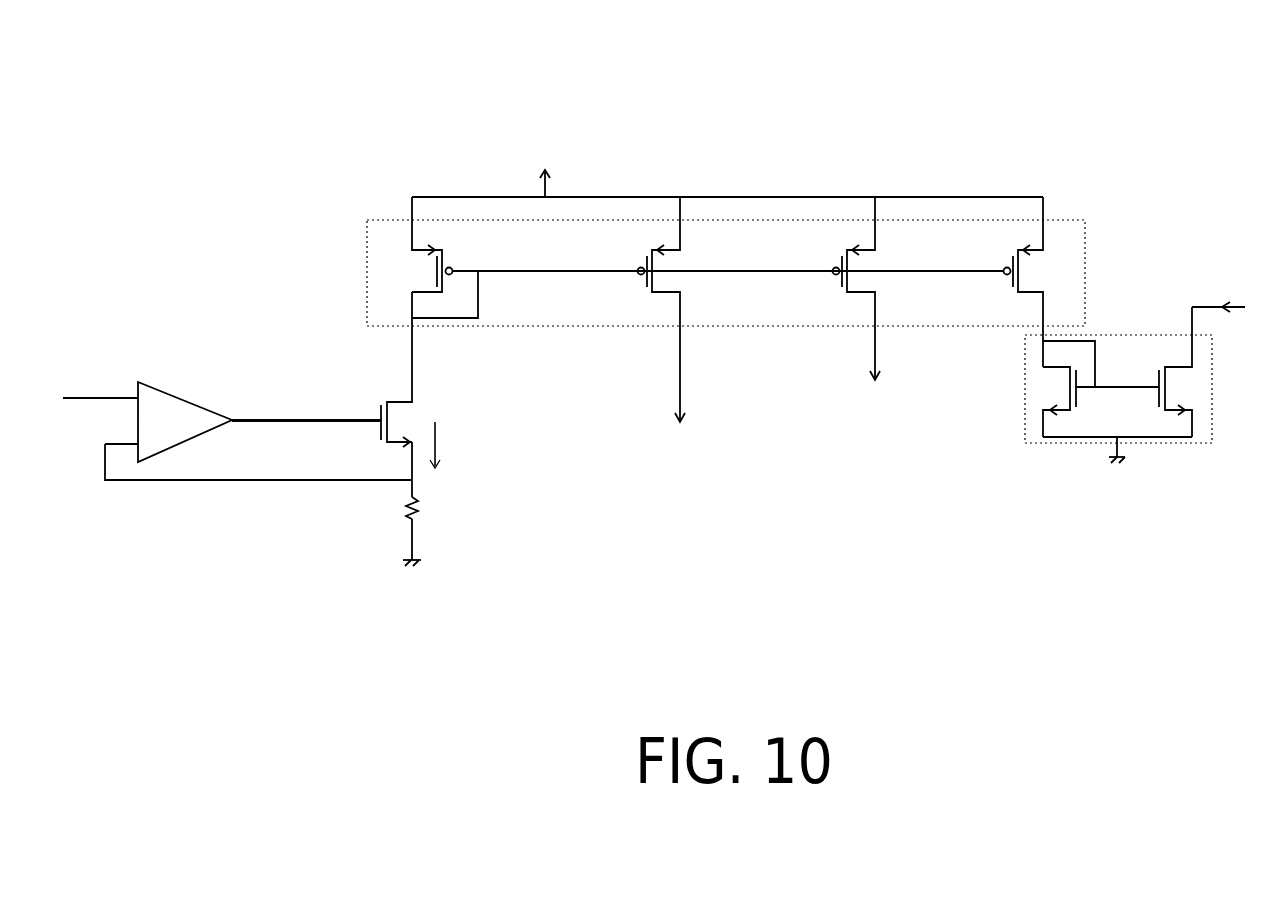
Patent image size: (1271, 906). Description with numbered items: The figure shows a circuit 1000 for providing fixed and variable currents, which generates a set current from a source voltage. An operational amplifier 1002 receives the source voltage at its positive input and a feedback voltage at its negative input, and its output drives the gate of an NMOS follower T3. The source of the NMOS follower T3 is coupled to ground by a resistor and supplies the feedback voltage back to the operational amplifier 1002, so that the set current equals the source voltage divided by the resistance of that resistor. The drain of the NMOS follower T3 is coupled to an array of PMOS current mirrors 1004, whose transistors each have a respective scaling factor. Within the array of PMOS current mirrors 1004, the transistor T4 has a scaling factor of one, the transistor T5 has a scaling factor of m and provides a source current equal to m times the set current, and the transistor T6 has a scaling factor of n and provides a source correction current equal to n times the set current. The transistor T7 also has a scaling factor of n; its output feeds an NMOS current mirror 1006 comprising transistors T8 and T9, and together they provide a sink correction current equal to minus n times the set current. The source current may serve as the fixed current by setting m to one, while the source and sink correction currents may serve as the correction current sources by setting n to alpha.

The circuit 1000 is at (772, 76).
The operational amplifier 1002 is at (175, 393).
The array of PMOS current mirrors 1004 is at (1083, 280).
The NMOS current mirror 1006 is at (1038, 443).
The NMOS follower T3 is at (349, 429).
The transistor T4 is at (427, 257).
The transistor T5 is at (672, 329).
The transistor T6 is at (867, 304).
The transistor T7 is at (1040, 282).
The transistor T8 is at (1071, 402).
The transistor T9 is at (1188, 350).